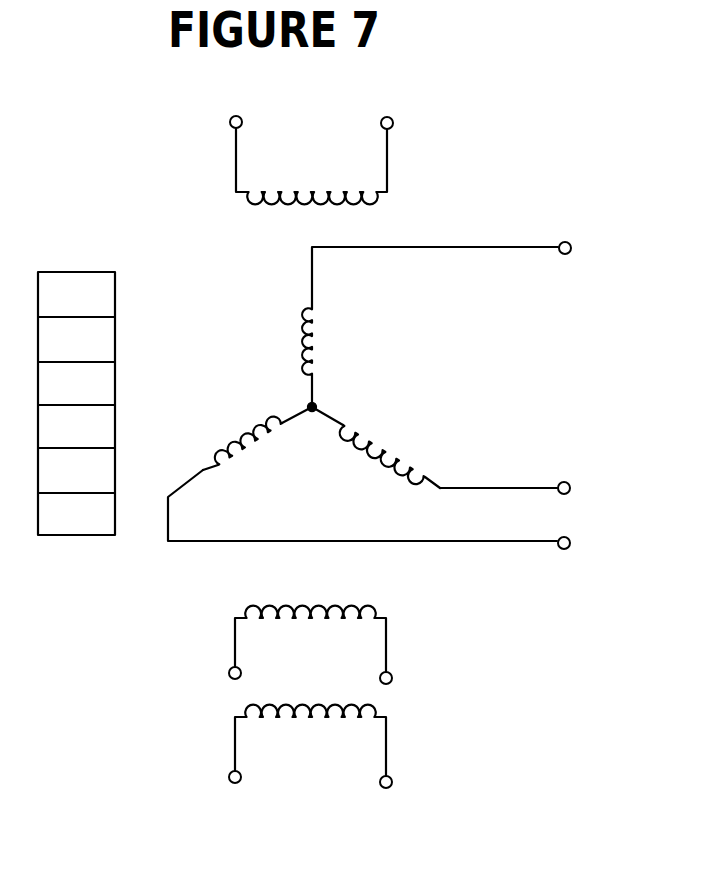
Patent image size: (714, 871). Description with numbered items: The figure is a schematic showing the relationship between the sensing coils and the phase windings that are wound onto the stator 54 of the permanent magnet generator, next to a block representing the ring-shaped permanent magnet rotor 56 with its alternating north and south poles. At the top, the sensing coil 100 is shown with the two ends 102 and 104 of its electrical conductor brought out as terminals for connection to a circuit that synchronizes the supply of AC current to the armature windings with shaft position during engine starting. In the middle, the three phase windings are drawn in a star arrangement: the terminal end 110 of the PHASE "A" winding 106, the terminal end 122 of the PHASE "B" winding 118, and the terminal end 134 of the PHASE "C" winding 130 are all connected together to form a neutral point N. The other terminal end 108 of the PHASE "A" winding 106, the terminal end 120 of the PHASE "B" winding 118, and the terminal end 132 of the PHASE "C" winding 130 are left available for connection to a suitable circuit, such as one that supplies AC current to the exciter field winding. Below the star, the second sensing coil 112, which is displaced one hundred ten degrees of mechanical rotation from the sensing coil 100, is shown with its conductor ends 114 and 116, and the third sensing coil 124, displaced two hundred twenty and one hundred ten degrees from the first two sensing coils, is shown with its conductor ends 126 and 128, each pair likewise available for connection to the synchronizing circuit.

The stator 54 is at (340, 577).
The rotor 56 is at (100, 250).
The sensing coil 100 is at (290, 192).
The end of electrical conductor 102 is at (236, 155).
The end of electrical conductor 104 is at (389, 150).
The PHASE "A" winding 106 is at (318, 328).
The terminal end 108 is at (465, 248).
The terminal end 110 is at (313, 386).
The second sensing coil 112 is at (337, 608).
The end of electrical conductor 114 is at (233, 655).
The end of electrical conductor 116 is at (389, 657).
The PHASE "B" winding 118 is at (385, 437).
The terminal end 120 is at (513, 488).
The terminal end 122 is at (327, 420).
The third sensing coil 124 is at (285, 705).
The end of electrical conductor 126 is at (233, 742).
The end of electrical conductor 128 is at (389, 745).
The PHASE "C" winding 130 is at (232, 470).
The terminal end 132 is at (508, 545).
The terminal end 134 is at (288, 418).